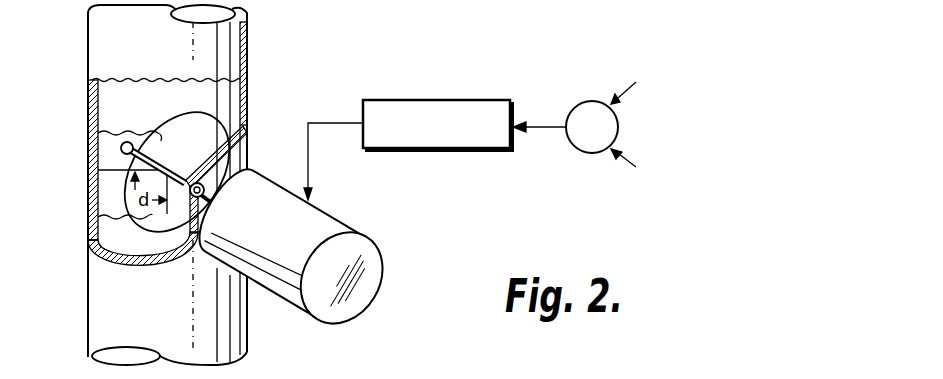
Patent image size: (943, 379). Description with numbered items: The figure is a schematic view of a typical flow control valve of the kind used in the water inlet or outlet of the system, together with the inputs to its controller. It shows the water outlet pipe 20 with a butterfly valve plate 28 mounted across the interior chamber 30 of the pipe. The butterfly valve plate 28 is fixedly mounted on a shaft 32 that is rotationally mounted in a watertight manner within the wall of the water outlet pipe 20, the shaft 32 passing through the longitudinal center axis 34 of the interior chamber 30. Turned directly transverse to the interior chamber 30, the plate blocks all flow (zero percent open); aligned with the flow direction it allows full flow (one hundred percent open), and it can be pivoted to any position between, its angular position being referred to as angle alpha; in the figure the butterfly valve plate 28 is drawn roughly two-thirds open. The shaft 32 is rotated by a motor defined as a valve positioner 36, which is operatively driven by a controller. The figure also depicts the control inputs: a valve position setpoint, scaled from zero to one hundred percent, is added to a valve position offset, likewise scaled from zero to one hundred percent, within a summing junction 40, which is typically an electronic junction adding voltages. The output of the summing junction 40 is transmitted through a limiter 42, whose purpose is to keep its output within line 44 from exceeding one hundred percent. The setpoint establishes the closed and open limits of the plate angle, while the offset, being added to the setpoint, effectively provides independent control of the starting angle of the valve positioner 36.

The water outlet pipe 20 is at (247, 40).
The butterfly valve plate 28 is at (121, 146).
The interior chamber 30 is at (100, 104).
The shaft 32 is at (238, 158).
The longitudinal center axis 34 is at (112, 214).
The valve positioner 36 is at (371, 277).
The summing junction 40 is at (590, 100).
The limiter 42 is at (443, 148).
The line 44 is at (337, 123).